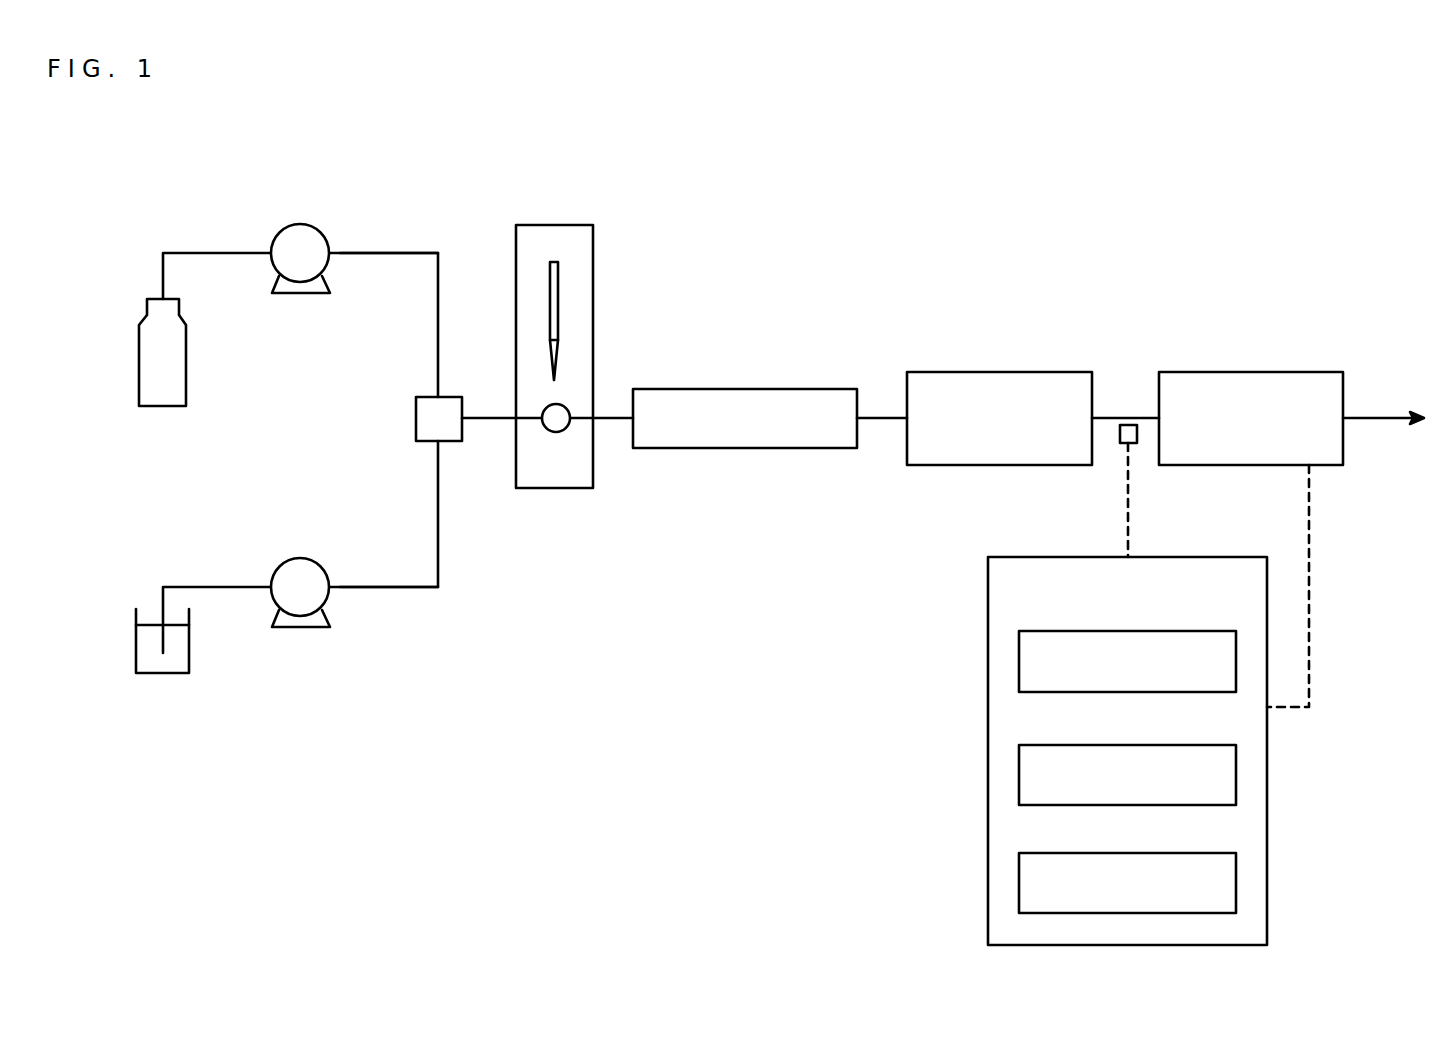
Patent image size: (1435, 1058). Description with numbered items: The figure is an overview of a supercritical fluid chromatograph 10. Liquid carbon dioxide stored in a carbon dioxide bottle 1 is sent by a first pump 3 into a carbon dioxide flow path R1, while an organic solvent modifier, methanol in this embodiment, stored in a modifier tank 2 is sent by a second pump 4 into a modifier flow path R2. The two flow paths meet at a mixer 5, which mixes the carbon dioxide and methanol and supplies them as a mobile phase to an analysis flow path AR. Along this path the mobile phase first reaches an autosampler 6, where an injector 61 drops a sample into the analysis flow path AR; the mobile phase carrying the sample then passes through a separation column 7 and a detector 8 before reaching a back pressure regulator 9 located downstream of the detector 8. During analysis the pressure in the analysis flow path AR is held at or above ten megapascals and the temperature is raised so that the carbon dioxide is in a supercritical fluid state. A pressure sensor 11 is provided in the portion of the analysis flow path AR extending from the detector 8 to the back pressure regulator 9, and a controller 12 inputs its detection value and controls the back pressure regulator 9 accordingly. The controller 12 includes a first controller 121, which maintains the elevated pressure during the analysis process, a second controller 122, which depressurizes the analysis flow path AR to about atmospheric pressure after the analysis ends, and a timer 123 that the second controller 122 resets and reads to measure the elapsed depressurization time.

The carbon dioxide bottle 1 is at (186, 382).
The modifier tank 2 is at (189, 658).
The first pump 3 is at (300, 224).
The second pump 4 is at (300, 558).
The mixer 5 is at (425, 397).
The autosampler 6 is at (556, 351).
The injector 61 is at (550, 288).
The separation column 7 is at (727, 389).
The detector 8 is at (1018, 372).
The back pressure regulator 9 is at (1280, 372).
The supercritical fluid chromatograph 10 is at (1193, 202).
The pressure sensor 11 is at (1120, 428).
The controller 12 is at (1178, 557).
The first controller 121 is at (1135, 631).
The second controller 122 is at (1135, 745).
The timer 123 is at (1135, 853).
The carbon dioxide flow path R1 is at (377, 253).
The modifier flow path R2 is at (413, 587).
The analysis flow path AR is at (878, 455).